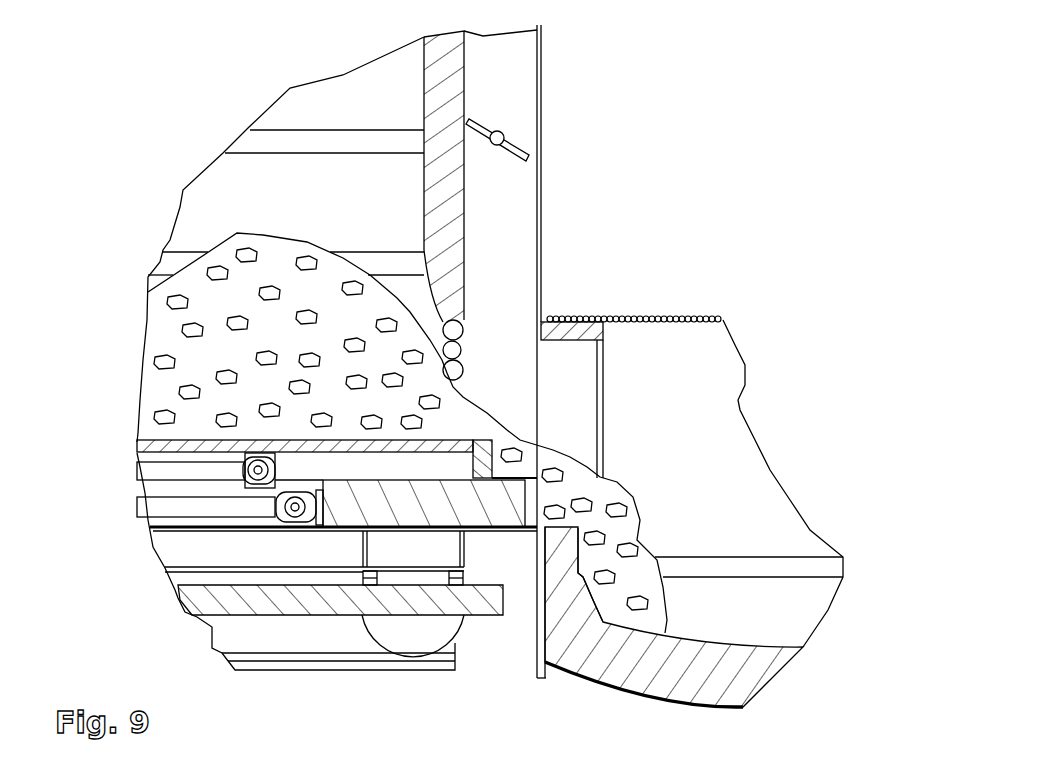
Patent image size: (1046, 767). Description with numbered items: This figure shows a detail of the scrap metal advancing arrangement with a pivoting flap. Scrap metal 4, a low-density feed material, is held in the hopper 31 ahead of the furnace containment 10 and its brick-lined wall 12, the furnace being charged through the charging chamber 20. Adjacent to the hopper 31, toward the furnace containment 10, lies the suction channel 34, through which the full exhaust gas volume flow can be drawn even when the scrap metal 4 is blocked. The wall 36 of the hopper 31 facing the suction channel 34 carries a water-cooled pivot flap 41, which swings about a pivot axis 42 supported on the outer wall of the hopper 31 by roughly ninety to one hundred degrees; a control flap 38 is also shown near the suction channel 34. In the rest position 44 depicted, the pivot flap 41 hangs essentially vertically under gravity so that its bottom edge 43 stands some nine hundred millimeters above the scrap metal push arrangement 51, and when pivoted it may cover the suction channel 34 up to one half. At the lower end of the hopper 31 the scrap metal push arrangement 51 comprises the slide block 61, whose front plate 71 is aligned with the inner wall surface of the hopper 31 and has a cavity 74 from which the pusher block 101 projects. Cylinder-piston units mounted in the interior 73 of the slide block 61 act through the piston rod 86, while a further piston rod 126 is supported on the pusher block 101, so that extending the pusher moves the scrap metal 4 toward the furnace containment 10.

The scrap metal 4 is at (225, 302).
The furnace containment 10 is at (687, 708).
The brick-lined wall 12 is at (598, 650).
The charging chamber 20 is at (173, 600).
The hopper 31 is at (310, 203).
The suction channel 34 is at (502, 110).
The wall of the hopper 36 is at (437, 73).
The control flap 38 is at (520, 148).
The pivot flap 41 is at (462, 353).
The pivot axis 42 is at (451, 329).
The bottom edge 43 is at (593, 369).
The rest position 44 is at (465, 342).
The scrap metal push arrangement 51 is at (190, 430).
The slide block 61 is at (160, 447).
The front plate 71 is at (483, 450).
The interior 73 is at (347, 464).
The cavity 74 is at (673, 479).
The piston rod 86 is at (185, 471).
The pusher block 101 is at (483, 505).
The piston rod 126 is at (205, 507).